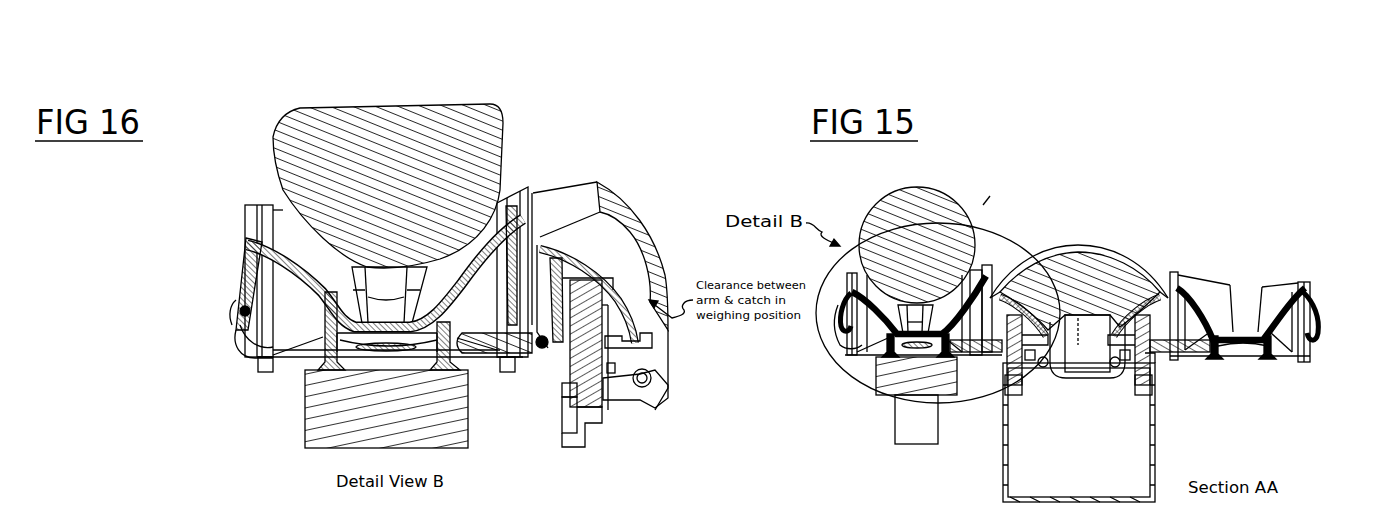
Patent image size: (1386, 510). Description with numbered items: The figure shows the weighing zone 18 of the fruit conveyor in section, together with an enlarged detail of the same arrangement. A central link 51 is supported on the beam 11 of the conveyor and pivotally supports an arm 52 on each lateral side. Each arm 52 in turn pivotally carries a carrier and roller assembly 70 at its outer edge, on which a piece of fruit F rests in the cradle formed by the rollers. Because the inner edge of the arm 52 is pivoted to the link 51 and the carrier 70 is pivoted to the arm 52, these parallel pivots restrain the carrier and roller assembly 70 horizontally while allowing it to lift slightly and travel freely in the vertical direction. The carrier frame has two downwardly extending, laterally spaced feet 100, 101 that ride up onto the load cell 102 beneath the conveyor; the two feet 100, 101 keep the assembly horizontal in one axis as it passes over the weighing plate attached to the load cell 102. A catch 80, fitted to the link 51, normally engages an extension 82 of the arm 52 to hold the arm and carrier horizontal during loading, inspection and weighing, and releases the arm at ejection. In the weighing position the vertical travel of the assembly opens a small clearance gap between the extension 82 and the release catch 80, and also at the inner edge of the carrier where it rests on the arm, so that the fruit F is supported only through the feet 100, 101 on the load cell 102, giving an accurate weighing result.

In FIG. 16, the fruit F is at (330, 120).
In FIG. 15, the fruit F is at (874, 212).
In FIG. 15, the beam 11 is at (1154, 428).
In FIG. 16, the weighing zone 18 is at (553, 148).
In FIG. 15, the weighing zone 18 is at (980, 205).
In FIG. 16, the central link 51 is at (582, 186).
In FIG. 15, the central link 51 is at (1075, 258).
In FIG. 16, the arm 52 is at (582, 248).
In FIG. 15, the arm 52 is at (1005, 290).
In FIG. 16, the carrier and roller assembly 70 is at (232, 289).
In FIG. 15, the carrier and roller assembly 70 is at (850, 304).
In FIG. 16, the catch 80 is at (656, 388).
In FIG. 16, the extension 82 is at (657, 338).
In FIG. 16, the foot 100 is at (320, 370).
In FIG. 15, the foot 100 is at (880, 358).
In FIG. 16, the foot 101 is at (463, 372).
In FIG. 15, the foot 101 is at (954, 366).
In FIG. 16, the load cell 102 is at (324, 432).
In FIG. 15, the load cell 102 is at (892, 384).